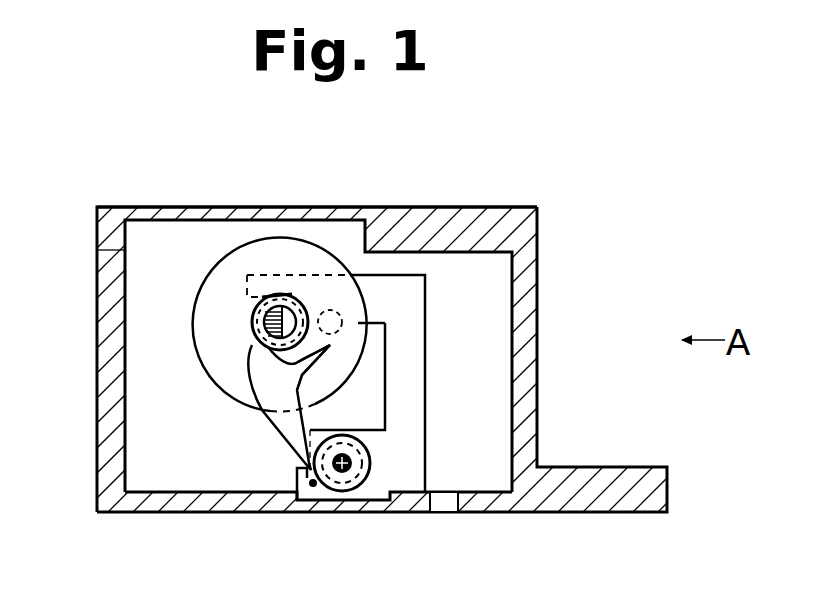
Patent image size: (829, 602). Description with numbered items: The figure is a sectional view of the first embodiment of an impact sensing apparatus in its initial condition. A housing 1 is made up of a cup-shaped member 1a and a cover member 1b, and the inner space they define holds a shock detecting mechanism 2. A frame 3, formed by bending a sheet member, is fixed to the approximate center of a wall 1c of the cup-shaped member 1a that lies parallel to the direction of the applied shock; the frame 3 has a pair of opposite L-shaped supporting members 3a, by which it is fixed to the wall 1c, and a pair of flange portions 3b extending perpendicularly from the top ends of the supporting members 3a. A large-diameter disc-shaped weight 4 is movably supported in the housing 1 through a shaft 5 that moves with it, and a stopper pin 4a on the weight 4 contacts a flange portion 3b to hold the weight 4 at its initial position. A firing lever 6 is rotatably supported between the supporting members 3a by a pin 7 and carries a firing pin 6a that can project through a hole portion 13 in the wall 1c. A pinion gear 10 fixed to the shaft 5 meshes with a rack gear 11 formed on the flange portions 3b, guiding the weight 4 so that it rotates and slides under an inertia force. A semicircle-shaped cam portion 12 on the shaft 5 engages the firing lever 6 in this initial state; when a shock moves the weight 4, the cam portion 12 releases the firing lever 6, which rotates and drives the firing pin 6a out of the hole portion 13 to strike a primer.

The housing 1 is at (497, 202).
The cup-shaped member 1a is at (520, 407).
The cover member 1b is at (395, 233).
The wall 1c is at (258, 505).
The shock detecting mechanism 2 is at (246, 425).
The frame 3 is at (430, 417).
The L-shaped supporting members 3a is at (400, 423).
The flange portions 3b is at (368, 288).
The weight 4 is at (203, 270).
The stopper pin 4a is at (327, 307).
The shaft 5 is at (268, 318).
The firing lever 6 is at (246, 378).
The firing pin 6a is at (334, 343).
The pin 7 is at (342, 472).
The pinion gear 10 is at (332, 378).
The rack gear 11 is at (261, 289).
The cam portion 12 is at (257, 332).
The hole portion 13 is at (440, 500).